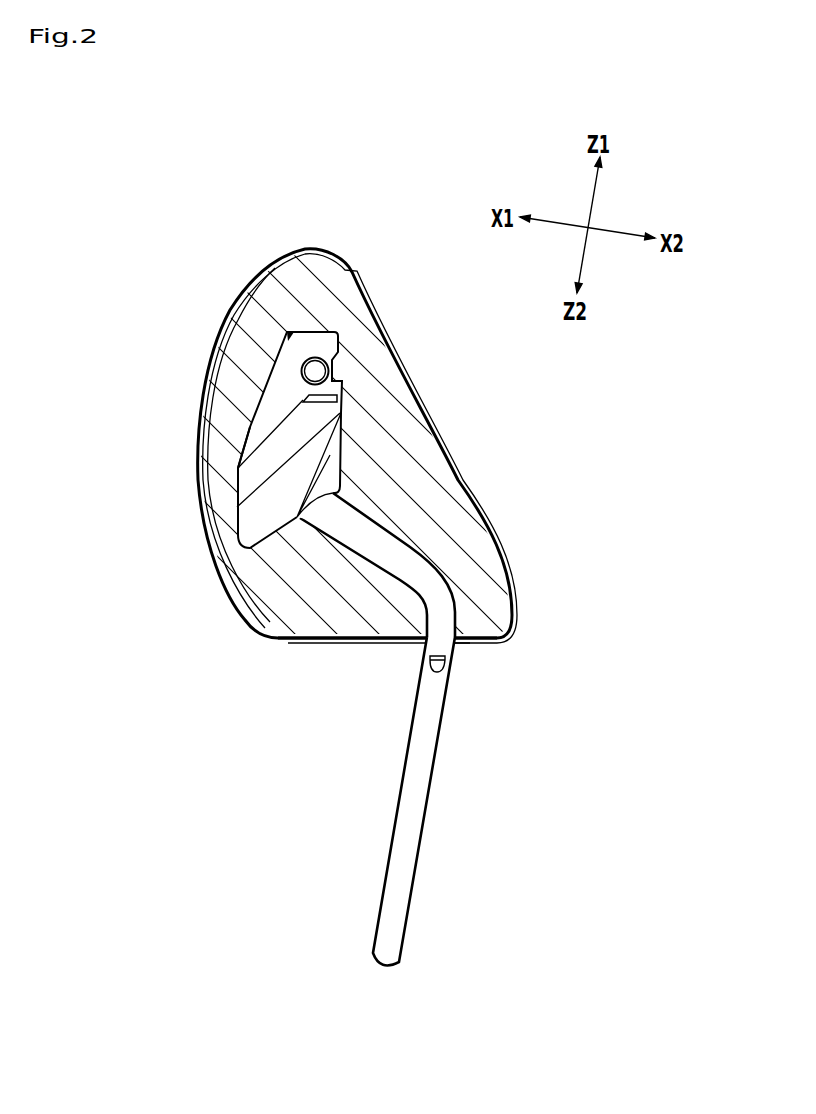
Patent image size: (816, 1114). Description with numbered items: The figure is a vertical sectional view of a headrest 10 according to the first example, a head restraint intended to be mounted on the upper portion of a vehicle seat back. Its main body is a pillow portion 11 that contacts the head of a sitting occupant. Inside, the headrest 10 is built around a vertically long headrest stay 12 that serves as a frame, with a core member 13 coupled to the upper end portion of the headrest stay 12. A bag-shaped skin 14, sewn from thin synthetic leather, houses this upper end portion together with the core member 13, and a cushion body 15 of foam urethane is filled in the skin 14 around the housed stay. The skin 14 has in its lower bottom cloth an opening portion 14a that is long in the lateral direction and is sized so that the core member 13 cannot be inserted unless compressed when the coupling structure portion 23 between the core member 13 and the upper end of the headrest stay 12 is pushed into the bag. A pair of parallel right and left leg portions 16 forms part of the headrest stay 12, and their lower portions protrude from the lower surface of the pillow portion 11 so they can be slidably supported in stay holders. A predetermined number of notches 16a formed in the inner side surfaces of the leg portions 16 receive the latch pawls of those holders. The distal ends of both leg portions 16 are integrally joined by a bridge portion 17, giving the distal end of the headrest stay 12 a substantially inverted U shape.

The headrest 10 is at (396, 209).
The pillow portion 11 is at (191, 338).
The headrest stay 12 is at (414, 541).
The core member 13 is at (255, 401).
The skin 14 is at (436, 438).
The opening portion 14a is at (375, 642).
The cushion body 15 is at (298, 573).
The leg portion 16 is at (417, 789).
The notch 16a is at (424, 660).
The bridge portion 17 is at (327, 370).
The coupling structure portion 23 is at (228, 472).